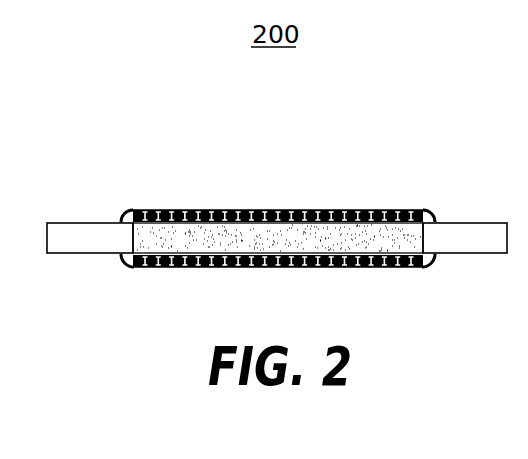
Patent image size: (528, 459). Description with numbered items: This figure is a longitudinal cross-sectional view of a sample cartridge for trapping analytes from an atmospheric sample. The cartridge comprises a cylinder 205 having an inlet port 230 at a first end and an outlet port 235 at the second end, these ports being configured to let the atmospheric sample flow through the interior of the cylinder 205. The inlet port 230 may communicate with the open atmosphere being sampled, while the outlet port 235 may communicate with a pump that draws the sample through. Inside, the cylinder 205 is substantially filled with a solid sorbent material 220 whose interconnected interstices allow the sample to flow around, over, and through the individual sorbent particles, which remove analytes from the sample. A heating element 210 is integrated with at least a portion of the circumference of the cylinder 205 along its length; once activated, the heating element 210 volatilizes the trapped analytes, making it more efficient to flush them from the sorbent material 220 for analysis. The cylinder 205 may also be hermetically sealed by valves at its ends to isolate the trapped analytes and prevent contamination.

The cylinder 205 is at (159, 194).
The heating element 210 is at (373, 209).
The sorbent material 220 is at (173, 245).
The inlet port 230 is at (466, 243).
The outlet port 235 is at (77, 245).